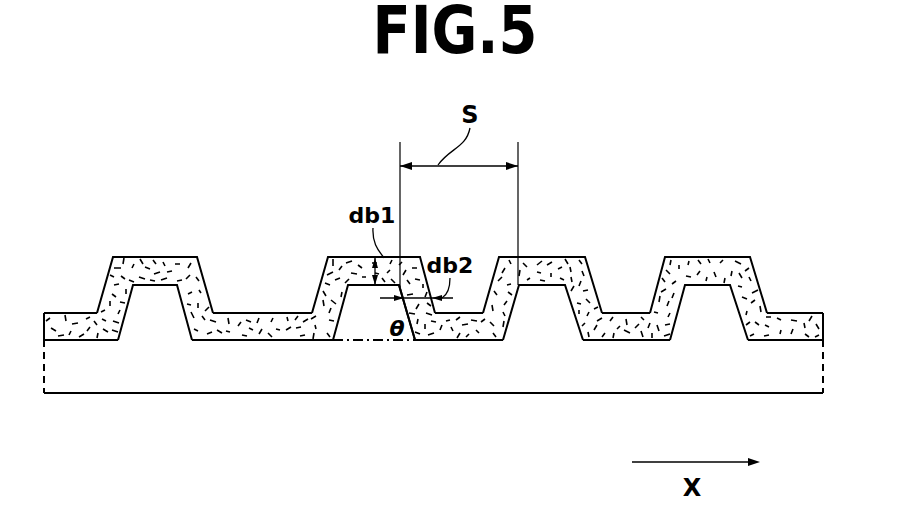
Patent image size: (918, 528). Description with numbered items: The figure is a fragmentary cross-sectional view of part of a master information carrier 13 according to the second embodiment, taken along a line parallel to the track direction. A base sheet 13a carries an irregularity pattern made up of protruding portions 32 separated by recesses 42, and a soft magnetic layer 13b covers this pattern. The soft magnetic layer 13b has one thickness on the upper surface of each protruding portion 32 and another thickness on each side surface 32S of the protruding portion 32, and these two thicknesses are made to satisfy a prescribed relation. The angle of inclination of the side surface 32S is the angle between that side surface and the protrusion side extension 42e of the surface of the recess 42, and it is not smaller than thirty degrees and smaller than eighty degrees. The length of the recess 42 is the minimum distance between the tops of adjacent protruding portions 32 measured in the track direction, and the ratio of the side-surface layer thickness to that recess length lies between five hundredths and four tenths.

The master information carrier 13 is at (123, 145).
The base sheet 13a is at (797, 383).
The soft magnetic layer 13b is at (798, 315).
The protruding portion 32 is at (157, 287).
The side surface of the protruding portion 32S is at (406, 287).
The recess 42 is at (472, 330).
The protrusion side extension of the recess surface 42e is at (382, 342).